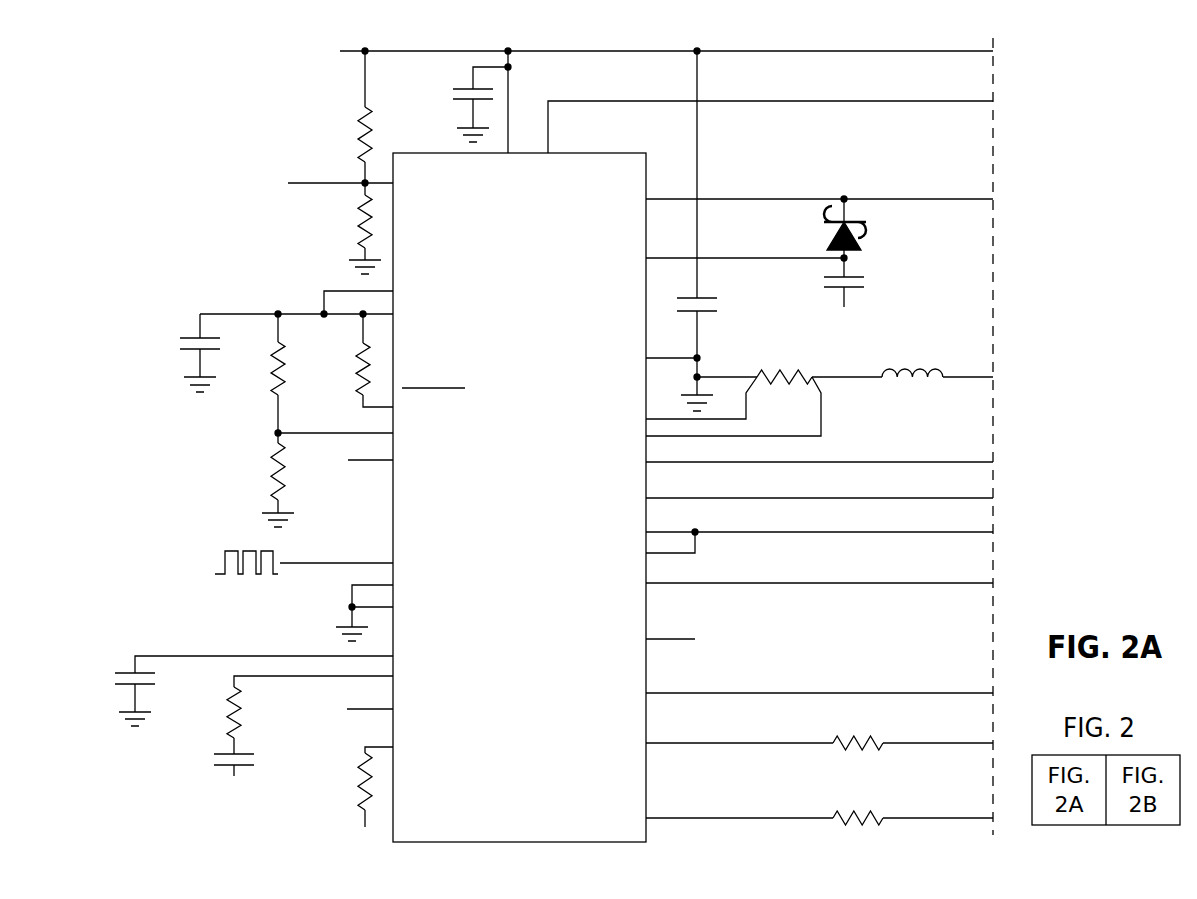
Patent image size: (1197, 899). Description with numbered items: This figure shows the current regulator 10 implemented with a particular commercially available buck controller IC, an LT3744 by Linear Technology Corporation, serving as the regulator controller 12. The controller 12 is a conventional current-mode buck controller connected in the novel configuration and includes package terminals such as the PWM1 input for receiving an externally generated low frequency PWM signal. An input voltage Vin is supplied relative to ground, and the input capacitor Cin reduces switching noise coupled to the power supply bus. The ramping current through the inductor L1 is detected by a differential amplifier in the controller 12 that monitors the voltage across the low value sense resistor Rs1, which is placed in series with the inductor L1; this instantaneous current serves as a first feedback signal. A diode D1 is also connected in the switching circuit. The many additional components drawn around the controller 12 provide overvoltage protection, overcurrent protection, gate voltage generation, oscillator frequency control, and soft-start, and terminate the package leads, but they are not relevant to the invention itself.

The current regulator 10 is at (1050, 178).
The regulator controller 12 is at (646, 826).
The diode D1 is at (826, 228).
The input capacitor Cin is at (715, 231).
The sense resistor Rs1 is at (784, 376).
The inductor L1 is at (913, 339).